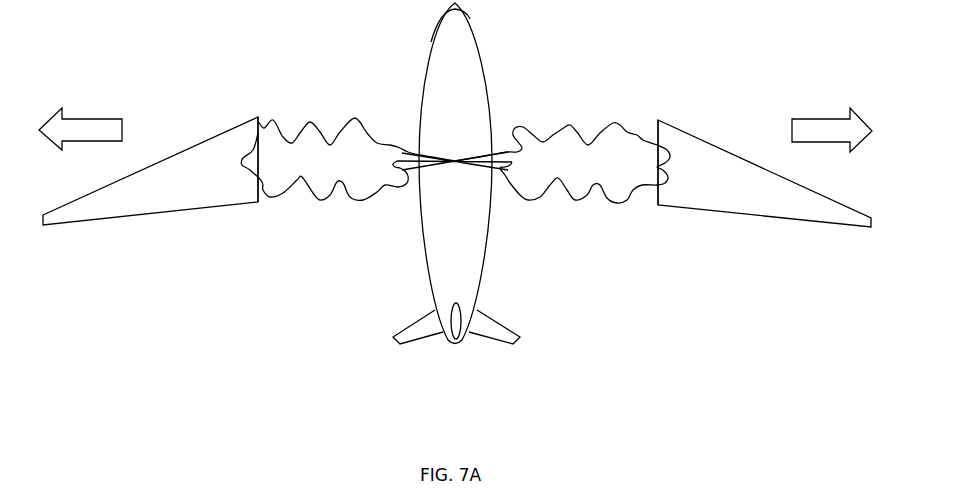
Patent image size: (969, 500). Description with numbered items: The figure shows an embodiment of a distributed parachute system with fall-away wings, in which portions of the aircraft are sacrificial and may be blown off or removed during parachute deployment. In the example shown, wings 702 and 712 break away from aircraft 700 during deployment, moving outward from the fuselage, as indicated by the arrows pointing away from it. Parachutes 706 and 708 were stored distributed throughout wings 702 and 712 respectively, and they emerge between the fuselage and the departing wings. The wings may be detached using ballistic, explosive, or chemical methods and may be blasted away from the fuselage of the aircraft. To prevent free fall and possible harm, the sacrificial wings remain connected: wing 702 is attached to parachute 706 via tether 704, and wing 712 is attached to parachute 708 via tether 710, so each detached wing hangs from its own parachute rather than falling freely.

The aircraft 700 is at (433, 40).
The wing 702 is at (97, 188).
The tether 704 is at (267, 125).
The parachute 706 is at (312, 123).
The parachute 708 is at (563, 126).
The tether 710 is at (630, 126).
The wing 712 is at (820, 194).